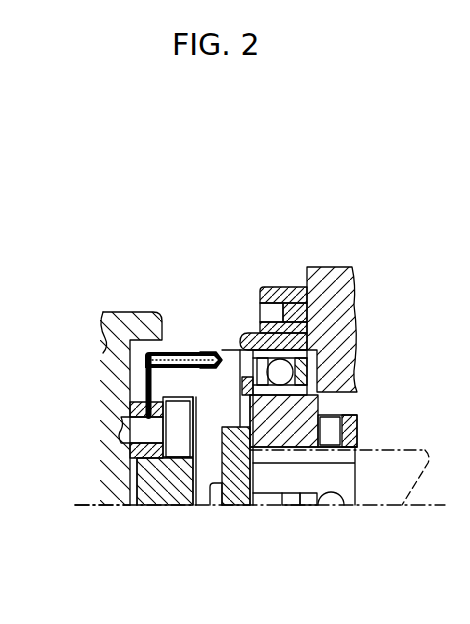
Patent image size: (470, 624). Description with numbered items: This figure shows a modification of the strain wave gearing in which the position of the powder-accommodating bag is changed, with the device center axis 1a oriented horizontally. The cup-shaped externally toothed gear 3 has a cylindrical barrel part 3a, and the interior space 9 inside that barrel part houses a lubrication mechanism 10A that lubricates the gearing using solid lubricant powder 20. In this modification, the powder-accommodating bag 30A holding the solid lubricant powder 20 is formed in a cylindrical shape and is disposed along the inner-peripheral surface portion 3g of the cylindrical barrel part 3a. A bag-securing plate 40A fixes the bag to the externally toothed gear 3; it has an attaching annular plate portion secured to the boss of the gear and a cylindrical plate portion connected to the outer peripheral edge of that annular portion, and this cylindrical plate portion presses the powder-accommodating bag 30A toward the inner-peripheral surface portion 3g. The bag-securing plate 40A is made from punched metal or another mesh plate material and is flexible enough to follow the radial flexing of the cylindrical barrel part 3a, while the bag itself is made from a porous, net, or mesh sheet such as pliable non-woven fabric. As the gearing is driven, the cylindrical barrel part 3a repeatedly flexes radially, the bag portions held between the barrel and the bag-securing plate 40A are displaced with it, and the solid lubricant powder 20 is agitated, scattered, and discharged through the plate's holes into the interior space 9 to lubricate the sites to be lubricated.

The device center axis 1a is at (94, 516).
The externally toothed gear 3 is at (128, 358).
The cylindrical barrel part 3a is at (233, 400).
The inner-peripheral surface portion 3g is at (233, 400).
The interior space 9 is at (220, 411).
The lubrication mechanism 10A is at (178, 328).
The solid lubricant powder 20 is at (185, 344).
The powder-accommodating bag 30A is at (205, 344).
The bag-securing plate 40A is at (170, 376).